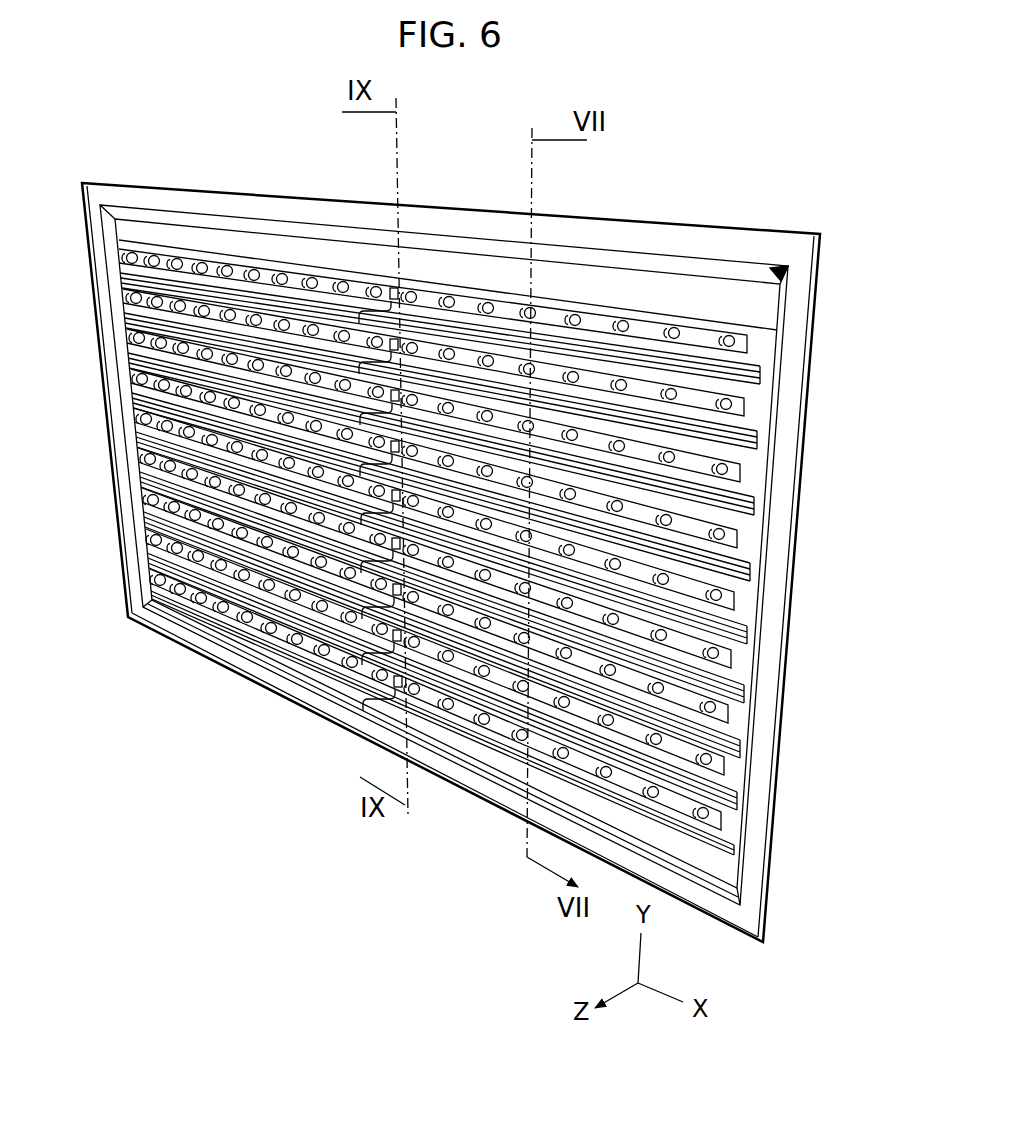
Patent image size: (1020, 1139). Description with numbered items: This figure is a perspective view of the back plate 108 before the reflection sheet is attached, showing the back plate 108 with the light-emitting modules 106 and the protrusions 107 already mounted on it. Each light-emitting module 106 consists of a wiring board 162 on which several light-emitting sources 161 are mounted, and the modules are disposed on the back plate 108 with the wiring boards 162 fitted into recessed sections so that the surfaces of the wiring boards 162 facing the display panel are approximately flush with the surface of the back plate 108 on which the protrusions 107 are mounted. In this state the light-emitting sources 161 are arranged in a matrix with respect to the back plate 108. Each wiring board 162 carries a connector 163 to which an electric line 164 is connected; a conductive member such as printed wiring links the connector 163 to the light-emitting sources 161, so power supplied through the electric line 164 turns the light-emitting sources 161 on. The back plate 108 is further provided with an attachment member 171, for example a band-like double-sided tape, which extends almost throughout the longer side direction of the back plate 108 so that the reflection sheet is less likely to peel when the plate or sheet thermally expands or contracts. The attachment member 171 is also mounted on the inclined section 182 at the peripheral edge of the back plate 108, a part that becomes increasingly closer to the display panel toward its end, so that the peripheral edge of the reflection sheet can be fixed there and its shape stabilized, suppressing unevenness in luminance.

The light-emitting module 106 is at (714, 332).
The protrusion 107 is at (246, 296).
The back plate 108 is at (692, 222).
The light-emitting source 161 is at (489, 298).
The wiring board 162 is at (436, 297).
The connector 163 is at (374, 288).
The electric line 164 is at (381, 288).
The attachment member 171 is at (600, 306).
The inclined section 182 is at (781, 264).